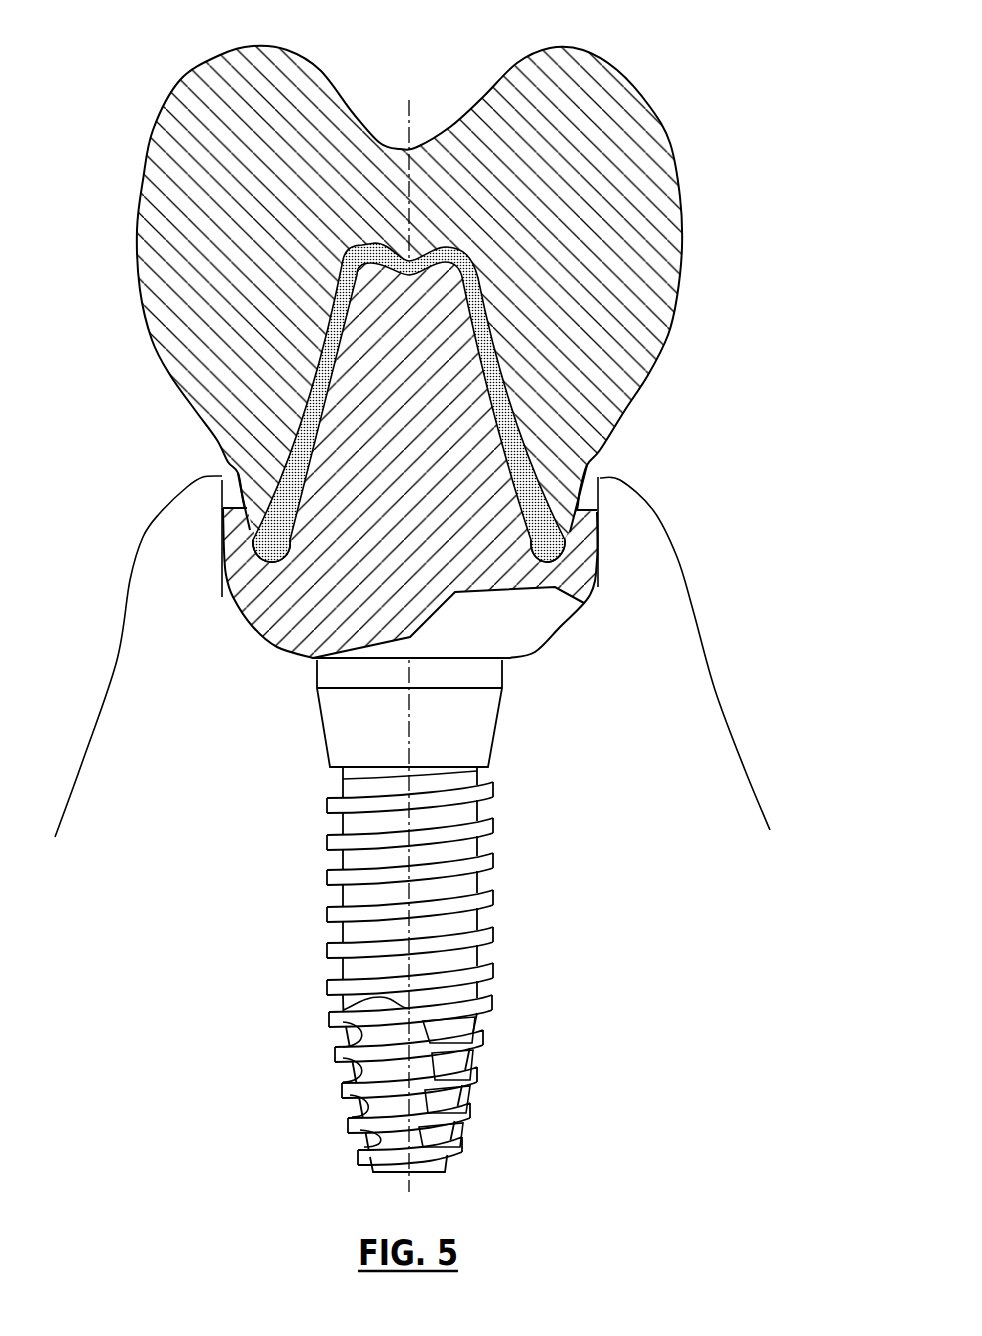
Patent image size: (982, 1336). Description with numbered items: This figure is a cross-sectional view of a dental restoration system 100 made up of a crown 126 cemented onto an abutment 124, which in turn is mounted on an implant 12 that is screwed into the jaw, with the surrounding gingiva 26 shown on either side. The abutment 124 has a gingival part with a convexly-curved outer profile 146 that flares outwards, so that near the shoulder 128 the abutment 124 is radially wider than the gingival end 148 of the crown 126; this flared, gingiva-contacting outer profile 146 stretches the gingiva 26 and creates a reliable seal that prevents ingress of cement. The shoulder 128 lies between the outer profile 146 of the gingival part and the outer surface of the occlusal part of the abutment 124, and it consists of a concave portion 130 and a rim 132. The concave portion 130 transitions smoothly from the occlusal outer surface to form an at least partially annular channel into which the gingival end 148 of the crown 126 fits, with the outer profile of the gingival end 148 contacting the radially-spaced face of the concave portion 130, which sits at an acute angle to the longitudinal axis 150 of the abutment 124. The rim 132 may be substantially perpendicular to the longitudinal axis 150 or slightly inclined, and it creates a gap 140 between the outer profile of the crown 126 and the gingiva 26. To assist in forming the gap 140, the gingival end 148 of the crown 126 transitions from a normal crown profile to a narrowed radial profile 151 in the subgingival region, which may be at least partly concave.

The dental restoration system 100 is at (770, 208).
The implant 12 is at (362, 904).
The gingiva 26 is at (190, 672).
The abutment 124 is at (476, 455).
The crown 126 is at (595, 188).
The shoulder 128 is at (243, 546).
The concave portion 130 is at (287, 558).
The rim 132 is at (223, 508).
The gap 140 is at (223, 460).
The convexly-curved outer profile 146 is at (233, 583).
The gingival end 148 is at (262, 517).
The longitudinal axis 150 is at (410, 232).
The narrowed radial profile 151 is at (238, 472).